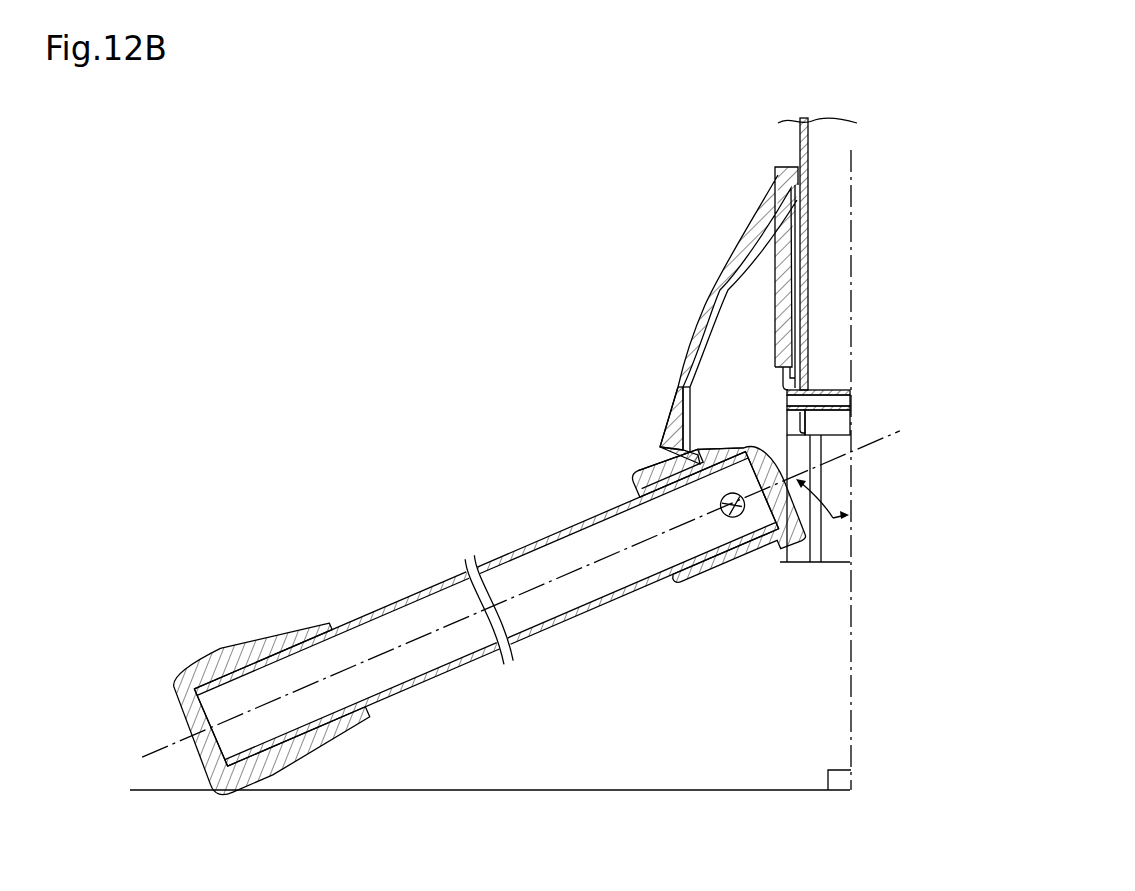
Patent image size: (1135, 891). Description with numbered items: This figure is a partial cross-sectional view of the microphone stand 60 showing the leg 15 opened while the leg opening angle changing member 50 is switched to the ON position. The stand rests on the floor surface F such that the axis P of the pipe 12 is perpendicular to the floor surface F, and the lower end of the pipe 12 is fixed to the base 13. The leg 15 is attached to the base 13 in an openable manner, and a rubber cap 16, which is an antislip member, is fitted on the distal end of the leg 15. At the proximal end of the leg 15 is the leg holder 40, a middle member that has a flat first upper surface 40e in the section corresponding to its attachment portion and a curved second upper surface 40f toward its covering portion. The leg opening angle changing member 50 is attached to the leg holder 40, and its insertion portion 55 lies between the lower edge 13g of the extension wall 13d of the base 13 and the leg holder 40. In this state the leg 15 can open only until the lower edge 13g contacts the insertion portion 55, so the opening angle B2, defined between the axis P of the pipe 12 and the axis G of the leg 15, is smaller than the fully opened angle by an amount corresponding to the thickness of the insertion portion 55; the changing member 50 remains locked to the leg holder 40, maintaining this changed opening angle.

The pipe 12 is at (800, 134).
The axis of the pipe P is at (852, 171).
The microphone stand 60 is at (872, 311).
The base 13 is at (708, 297).
The extension wall 13d is at (696, 318).
The lower edge of the extension wall 13g is at (661, 452).
The leg opening angle changing member 50 is at (663, 436).
The insertion portion 55 is at (647, 395).
The floor surface F is at (731, 790).
The leg 15 is at (386, 605).
The rubber cap 16 is at (201, 664).
The leg holder 40 is at (630, 484).
The first upper surface 40e is at (645, 462).
The second upper surface 40f is at (721, 467).
The axis of the legs G is at (897, 437).
The opening angle B2 is at (833, 522).